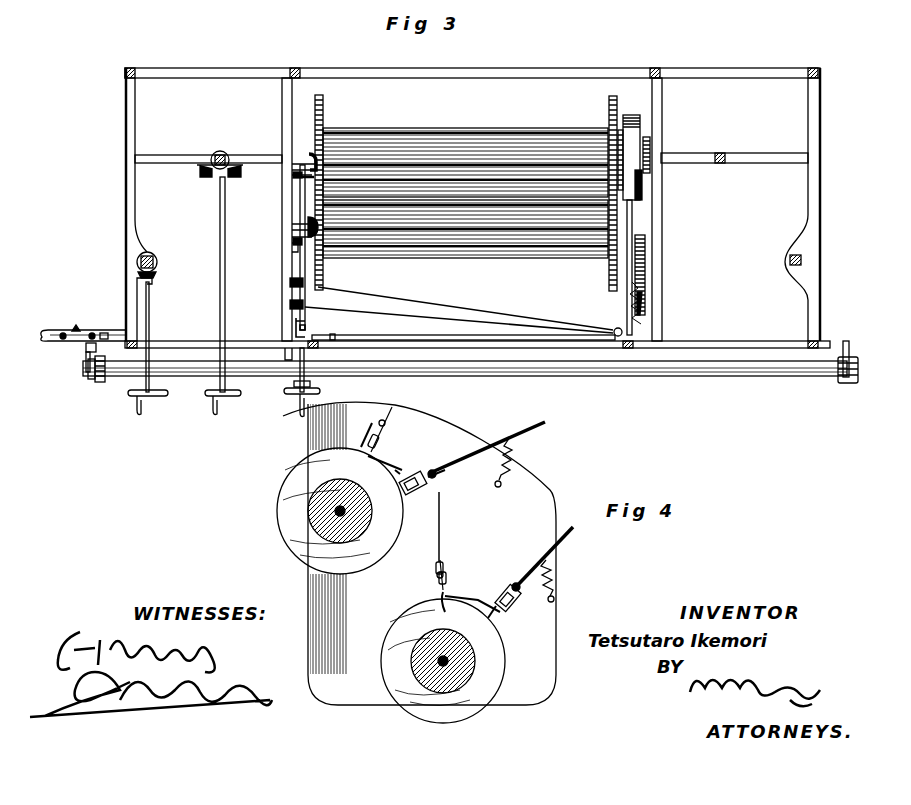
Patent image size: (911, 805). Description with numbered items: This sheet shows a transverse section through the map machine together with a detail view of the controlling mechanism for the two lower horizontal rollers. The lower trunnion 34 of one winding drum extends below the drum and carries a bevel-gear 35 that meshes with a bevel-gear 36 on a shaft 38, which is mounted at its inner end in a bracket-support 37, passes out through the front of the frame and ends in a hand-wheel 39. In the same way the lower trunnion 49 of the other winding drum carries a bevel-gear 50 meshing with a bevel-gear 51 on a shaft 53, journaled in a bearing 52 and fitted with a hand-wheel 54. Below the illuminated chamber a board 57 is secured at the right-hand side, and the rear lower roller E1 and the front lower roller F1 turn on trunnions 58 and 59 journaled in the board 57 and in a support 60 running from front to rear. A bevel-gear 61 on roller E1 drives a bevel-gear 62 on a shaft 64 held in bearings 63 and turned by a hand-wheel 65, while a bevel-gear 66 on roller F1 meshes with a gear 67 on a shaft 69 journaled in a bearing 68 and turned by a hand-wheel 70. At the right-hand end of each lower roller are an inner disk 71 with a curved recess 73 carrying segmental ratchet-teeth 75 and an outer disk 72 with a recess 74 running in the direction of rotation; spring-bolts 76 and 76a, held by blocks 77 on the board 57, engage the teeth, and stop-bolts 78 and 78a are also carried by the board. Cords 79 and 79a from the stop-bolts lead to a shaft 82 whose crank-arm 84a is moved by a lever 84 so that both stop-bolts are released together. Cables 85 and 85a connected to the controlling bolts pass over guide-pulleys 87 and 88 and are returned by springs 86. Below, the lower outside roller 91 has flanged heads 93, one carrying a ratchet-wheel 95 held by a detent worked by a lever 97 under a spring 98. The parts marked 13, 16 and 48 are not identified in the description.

In FIG. 3, the frame side 13 is at (126, 203).
In FIG. 3, the frame top rail 16 is at (576, 68).
In FIG. 3, the trunnion 34 is at (224, 152).
In FIG. 3, the bevel-gear 35 is at (212, 155).
In FIG. 3, the bevel-gear 36 is at (206, 173).
In FIG. 3, the bracket-support 37 is at (234, 172).
In FIG. 3, the shaft 38 is at (225, 228).
In FIG. 3, the hand-wheel 39 is at (225, 394).
In FIG. 3, the pivot pin 48 is at (790, 261).
In FIG. 3, the trunnion 49 is at (152, 253).
In FIG. 3, the bevel-gear 50 is at (157, 262).
In FIG. 3, the bevel-gear 51 is at (155, 276).
In FIG. 3, the bearing 52 is at (137, 282).
In FIG. 3, the shaft 53 is at (149, 313).
In FIG. 3, the hand-wheel 54 is at (152, 397).
In FIG. 3, the board 57 is at (662, 191).
In FIG. 4, the board 57 is at (308, 600).
In FIG. 3, the trunnions 58 is at (299, 163).
In FIG. 3, the trunnions 59 is at (296, 227).
In FIG. 3, the support 60 is at (290, 284).
In FIG. 3, the bevel-gear 61 is at (316, 166).
In FIG. 3, the bevel-gear 62 is at (293, 173).
In FIG. 3, the bearings 63 is at (314, 176).
In FIG. 3, the shaft 64 is at (323, 268).
In FIG. 3, the hand-wheel 65 is at (312, 389).
In FIG. 3, the bevel-gear 66 is at (319, 232).
In FIG. 3, the gear 67 is at (293, 245).
In FIG. 3, the bearing 68 is at (292, 253).
In FIG. 3, the shaft 69 is at (290, 398).
In FIG. 3, the hand-wheel 70 is at (302, 410).
In FIG. 3, the inner disk 71 is at (618, 125).
In FIG. 4, the inner disk 71 is at (376, 579).
In FIG. 3, the outer disk 72 is at (641, 136).
In FIG. 4, the outer disk 72 is at (456, 596).
In FIG. 4, the recess 73 is at (368, 504).
In FIG. 4, the recess 74 is at (368, 437).
In FIG. 4, the ratchet-teeth 75 is at (404, 496).
In FIG. 4, the spring-bolt 76 is at (412, 474).
In FIG. 4, the spring-bolt 76a is at (501, 583).
In FIG. 4, the blocks 77 is at (440, 476).
In FIG. 4, the stop-bolt 78 is at (382, 448).
In FIG. 4, the stop-bolt 78a is at (440, 592).
In FIG. 3, the cord or cable 79 is at (626, 308).
In FIG. 4, the cord or cable 79 is at (394, 408).
In FIG. 3, the cord or cable 79a is at (648, 308).
In FIG. 4, the cord or cable 79a is at (441, 530).
In FIG. 3, the shaft 82 is at (405, 336).
In FIG. 3, the lever 84 is at (288, 347).
In FIG. 3, the crank-arm 84a is at (308, 325).
In FIG. 3, the rope or cable 85 is at (495, 313).
In FIG. 4, the rope or cable 85 is at (511, 434).
In FIG. 3, the rope or cable 85a is at (428, 302).
In FIG. 4, the rope or cable 85a is at (569, 527).
In FIG. 4, the springs 86 is at (514, 458).
In FIG. 3, the guide-pulleys 87 is at (618, 339).
In FIG. 3, the guide-pulleys 88 is at (290, 306).
In FIG. 3, the lower roller 91 is at (776, 377).
In FIG. 3, the flanged heads 93 is at (103, 386).
In FIG. 3, the ratchet-wheel 95 is at (92, 384).
In FIG. 3, the lever 97 is at (86, 368).
In FIG. 3, the spring 98 is at (86, 350).
In FIG. 3, the rear lower roller E1 is at (486, 128).
In FIG. 4, the rear lower roller E1 is at (285, 478).
In FIG. 3, the front lower roller F1 is at (488, 240).
In FIG. 4, the front lower roller F1 is at (380, 640).